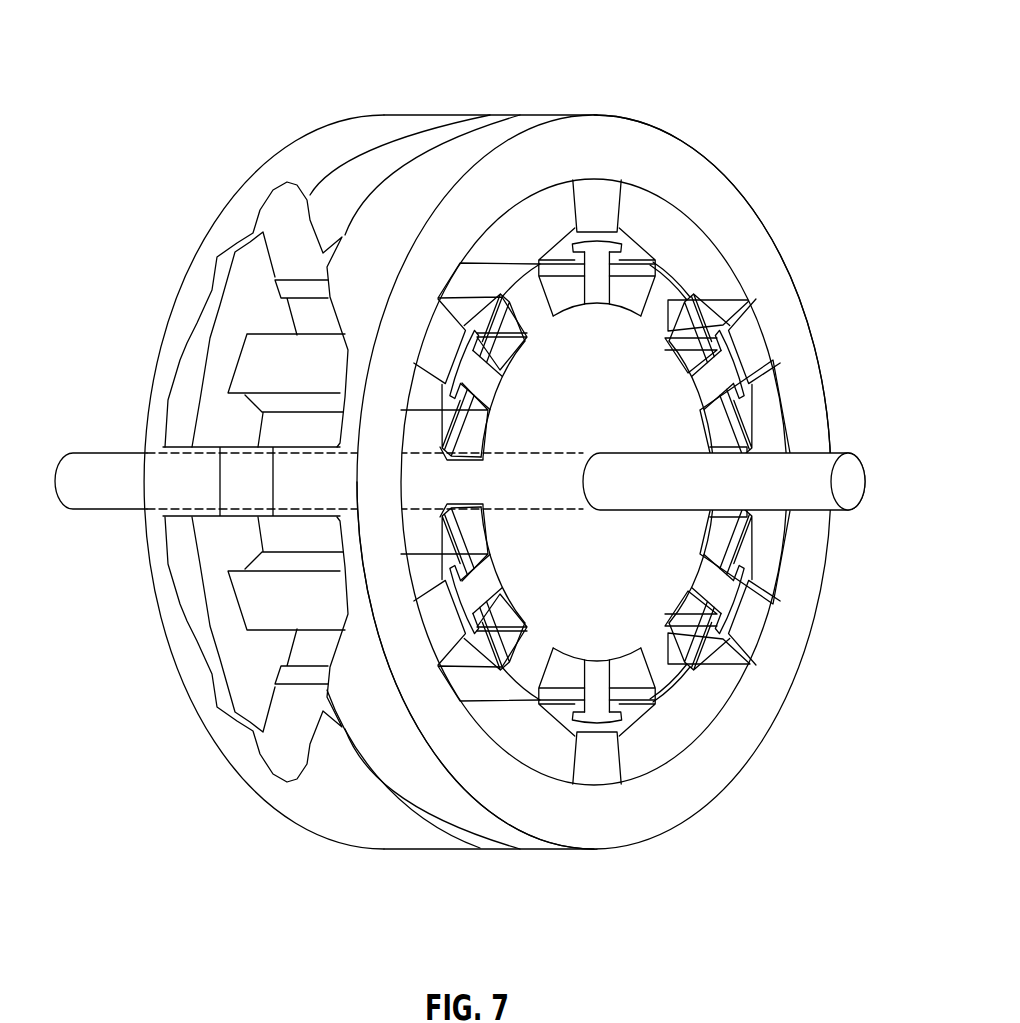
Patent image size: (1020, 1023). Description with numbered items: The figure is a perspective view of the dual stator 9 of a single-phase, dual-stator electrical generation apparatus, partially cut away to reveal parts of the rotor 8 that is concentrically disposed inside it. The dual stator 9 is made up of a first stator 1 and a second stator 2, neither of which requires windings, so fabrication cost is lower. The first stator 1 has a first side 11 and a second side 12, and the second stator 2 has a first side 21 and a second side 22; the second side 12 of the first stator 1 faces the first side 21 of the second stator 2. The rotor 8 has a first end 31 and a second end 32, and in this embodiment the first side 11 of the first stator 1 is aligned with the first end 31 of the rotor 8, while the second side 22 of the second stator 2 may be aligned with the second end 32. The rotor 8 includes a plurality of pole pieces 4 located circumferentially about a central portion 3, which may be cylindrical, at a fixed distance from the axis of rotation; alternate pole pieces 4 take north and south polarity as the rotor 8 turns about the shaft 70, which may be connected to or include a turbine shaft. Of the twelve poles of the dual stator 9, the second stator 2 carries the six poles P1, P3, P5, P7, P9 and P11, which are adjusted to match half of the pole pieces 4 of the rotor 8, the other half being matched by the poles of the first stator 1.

The first stator 1 is at (325, 110).
The second stator 2 is at (754, 182).
The central portion 3 is at (690, 428).
The pole pieces 4 is at (680, 290).
The rotor 8 is at (612, 425).
The dual stator 9 is at (588, 80).
The first side 11 is at (236, 189).
The second side 12 is at (432, 131).
The first side 21 is at (446, 843).
The second side 22 is at (746, 726).
The first end 31 is at (282, 316).
The second end 32 is at (633, 700).
The shaft 70 is at (694, 497).
The pole P1 is at (597, 248).
The pole P3 is at (729, 365).
The pole P5 is at (729, 599).
The pole P7 is at (597, 716).
The pole P9 is at (464, 599).
The pole P11 is at (464, 365).